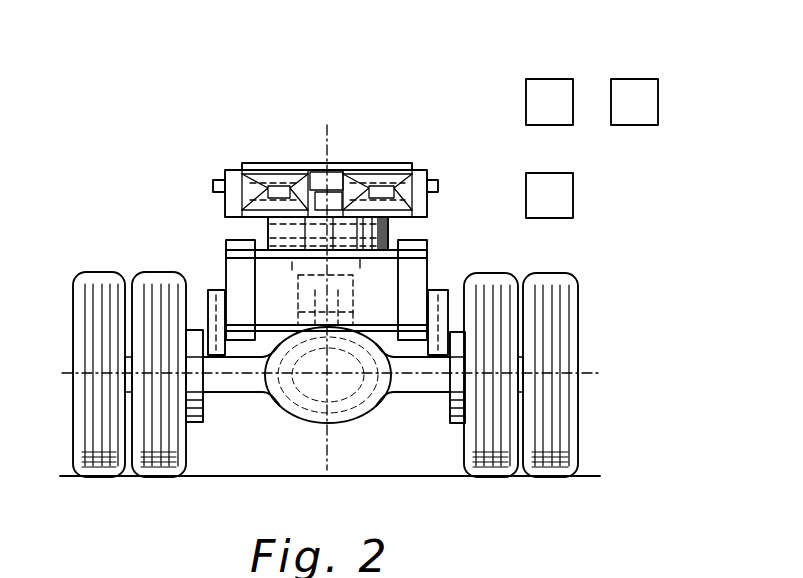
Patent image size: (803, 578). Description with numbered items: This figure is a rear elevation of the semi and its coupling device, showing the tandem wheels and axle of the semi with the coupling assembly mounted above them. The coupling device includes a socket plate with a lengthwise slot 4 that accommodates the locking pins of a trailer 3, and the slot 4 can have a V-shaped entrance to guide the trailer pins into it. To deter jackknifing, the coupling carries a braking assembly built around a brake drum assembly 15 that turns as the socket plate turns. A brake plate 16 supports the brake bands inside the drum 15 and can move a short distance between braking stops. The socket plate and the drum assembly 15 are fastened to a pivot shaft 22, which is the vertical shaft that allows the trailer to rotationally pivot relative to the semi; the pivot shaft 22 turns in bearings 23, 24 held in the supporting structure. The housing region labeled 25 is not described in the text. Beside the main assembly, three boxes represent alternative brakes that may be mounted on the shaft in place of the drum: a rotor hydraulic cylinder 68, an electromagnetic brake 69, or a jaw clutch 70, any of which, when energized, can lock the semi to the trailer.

The trailer 3 is at (488, 120).
The lengthwise slot 4 is at (343, 182).
The brake drum assembly 15 is at (370, 218).
The brake plate 16 is at (413, 288).
The pivot shaft 22 is at (340, 292).
The bearing 23 is at (300, 268).
The bearing 24 is at (302, 338).
The pump housing 25 is at (275, 233).
The rotor hydraulic cylinder 68 is at (547, 90).
The electromagnetic brake 69 is at (570, 180).
The jaw clutch 70 is at (647, 85).